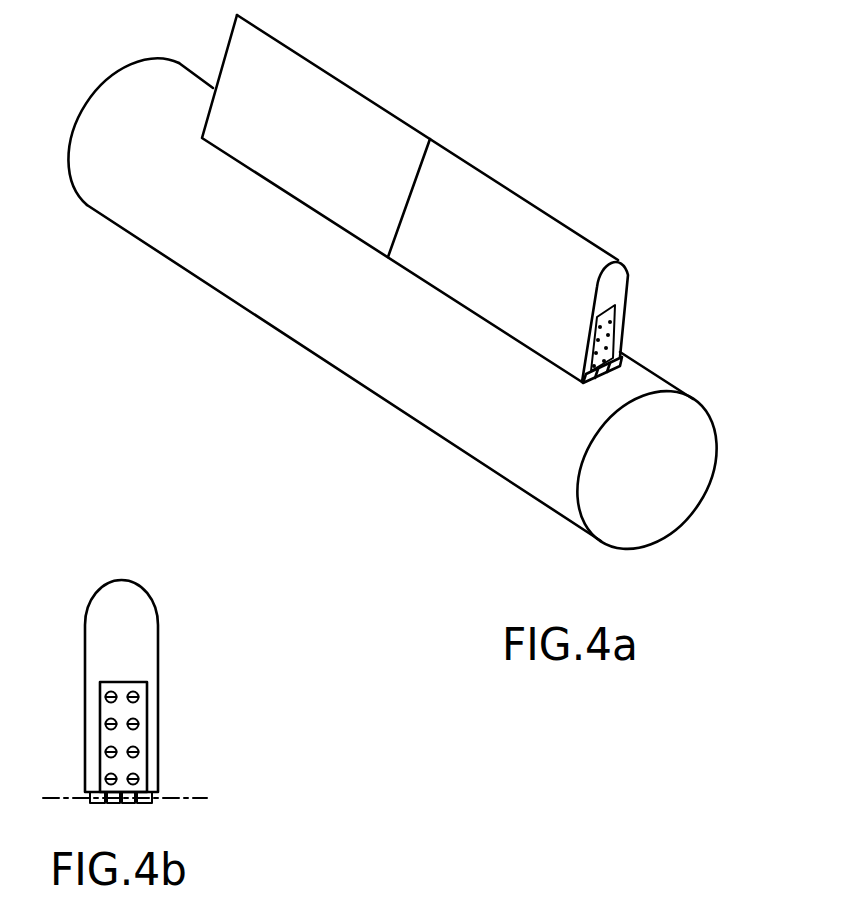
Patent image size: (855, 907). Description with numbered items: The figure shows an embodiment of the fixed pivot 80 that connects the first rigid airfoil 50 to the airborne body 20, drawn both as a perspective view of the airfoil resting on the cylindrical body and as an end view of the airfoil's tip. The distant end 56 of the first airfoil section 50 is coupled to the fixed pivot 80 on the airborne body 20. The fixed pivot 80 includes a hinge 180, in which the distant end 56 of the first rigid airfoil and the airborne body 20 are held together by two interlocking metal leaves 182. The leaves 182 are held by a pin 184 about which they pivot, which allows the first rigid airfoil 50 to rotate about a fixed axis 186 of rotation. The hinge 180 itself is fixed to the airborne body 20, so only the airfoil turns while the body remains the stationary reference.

In FIG. 4A, the airborne body 20 is at (707, 413).
In FIG. 4A, the first airfoil section 50 is at (482, 171).
In FIG. 4A, the distant end 56 is at (613, 282).
In FIG. 4B, the distant end 56 is at (148, 628).
In FIG. 4A, the fixed pivot 80 is at (583, 383).
In FIG. 4A, the hinge 180 is at (605, 327).
In FIG. 4B, the interlocking metal leaves 182 is at (102, 740).
In FIG. 4B, the pin 184 is at (92, 792).
In FIG. 4B, the fixed axis of rotation 186 is at (202, 797).